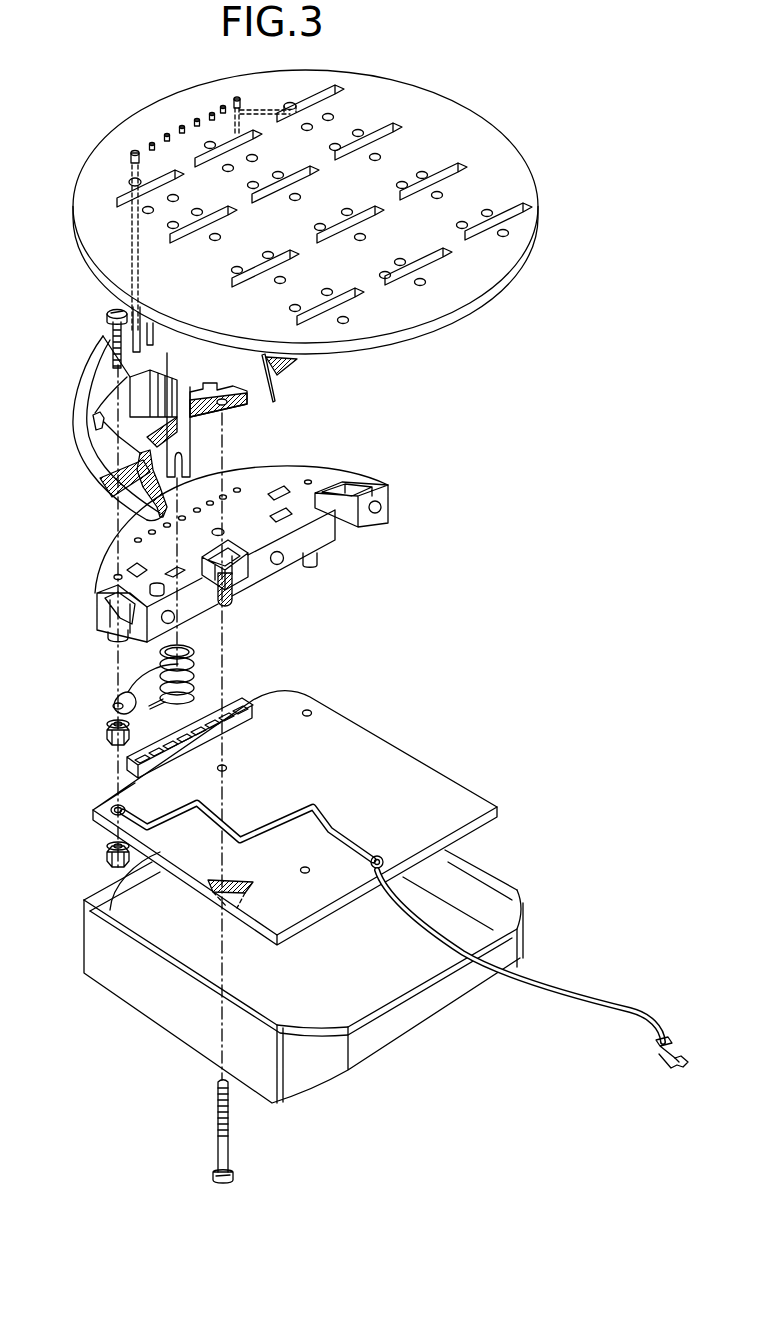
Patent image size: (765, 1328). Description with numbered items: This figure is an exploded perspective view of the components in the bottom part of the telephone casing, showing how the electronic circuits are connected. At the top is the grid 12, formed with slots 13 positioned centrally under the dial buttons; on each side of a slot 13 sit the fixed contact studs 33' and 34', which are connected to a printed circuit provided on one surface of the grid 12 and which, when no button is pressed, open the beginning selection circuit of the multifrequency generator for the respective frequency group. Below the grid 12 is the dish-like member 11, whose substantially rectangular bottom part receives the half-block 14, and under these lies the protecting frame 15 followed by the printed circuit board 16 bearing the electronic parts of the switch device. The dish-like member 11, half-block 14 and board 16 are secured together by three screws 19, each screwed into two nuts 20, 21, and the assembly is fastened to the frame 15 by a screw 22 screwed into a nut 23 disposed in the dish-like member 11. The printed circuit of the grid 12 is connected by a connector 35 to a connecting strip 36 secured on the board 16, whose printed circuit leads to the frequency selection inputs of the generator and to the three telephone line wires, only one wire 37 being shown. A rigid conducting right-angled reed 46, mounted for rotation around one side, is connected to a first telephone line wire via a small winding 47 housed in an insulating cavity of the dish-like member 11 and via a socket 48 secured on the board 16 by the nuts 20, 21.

The dish-like member 11 is at (90, 404).
The grid 12 is at (537, 182).
The slot 13 is at (512, 218).
The half-block 14 is at (385, 490).
The protecting frame 15 is at (525, 897).
The printed circuit board 16 is at (398, 746).
The screw 19 is at (108, 320).
The nut 20 is at (107, 736).
The nut 21 is at (109, 854).
The screw 22 is at (230, 1149).
The nut 23 is at (226, 404).
The fixed contact stud 33' is at (398, 95).
The fixed contact stud 34' is at (436, 117).
The connector 35 is at (130, 157).
The connecting strip 36 is at (125, 769).
The wire 37 is at (592, 995).
The right-angled reed 46 is at (275, 400).
The winding 47 is at (194, 668).
The socket 48 is at (113, 694).